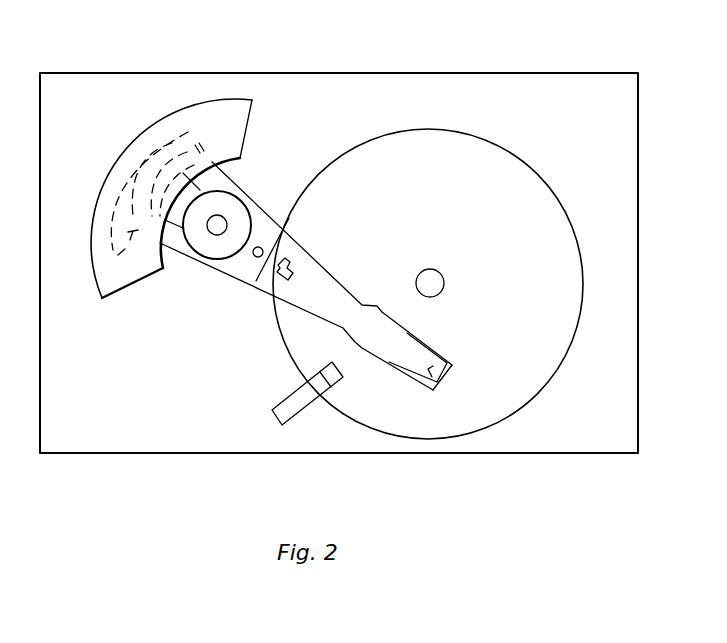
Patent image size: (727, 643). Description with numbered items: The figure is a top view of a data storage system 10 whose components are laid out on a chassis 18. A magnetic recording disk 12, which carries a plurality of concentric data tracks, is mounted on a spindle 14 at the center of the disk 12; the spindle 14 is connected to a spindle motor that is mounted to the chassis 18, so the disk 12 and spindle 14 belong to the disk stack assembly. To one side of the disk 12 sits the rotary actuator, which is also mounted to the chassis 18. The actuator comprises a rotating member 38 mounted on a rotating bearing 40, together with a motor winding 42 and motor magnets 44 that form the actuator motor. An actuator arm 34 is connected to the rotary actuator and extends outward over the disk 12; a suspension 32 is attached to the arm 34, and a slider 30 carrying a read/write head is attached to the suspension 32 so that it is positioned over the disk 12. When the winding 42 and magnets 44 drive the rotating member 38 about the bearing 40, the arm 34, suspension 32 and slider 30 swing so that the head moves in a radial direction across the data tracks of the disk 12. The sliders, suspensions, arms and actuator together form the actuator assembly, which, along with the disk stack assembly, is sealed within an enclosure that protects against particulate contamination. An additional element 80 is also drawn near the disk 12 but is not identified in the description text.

The disk drive 10 is at (163, 496).
The disk 12 is at (464, 196).
The spindle hub 14 is at (433, 282).
The housing base 18 is at (574, 126).
The slider with transducer head 30 is at (447, 375).
The actuator arm 32 is at (308, 283).
The pin 34 is at (259, 246).
The pivot bearing 38 is at (213, 250).
The pivot shaft 40 is at (220, 218).
The voice coil 42 is at (115, 252).
The magnet assembly 44 is at (215, 117).
The latch 80 is at (280, 403).